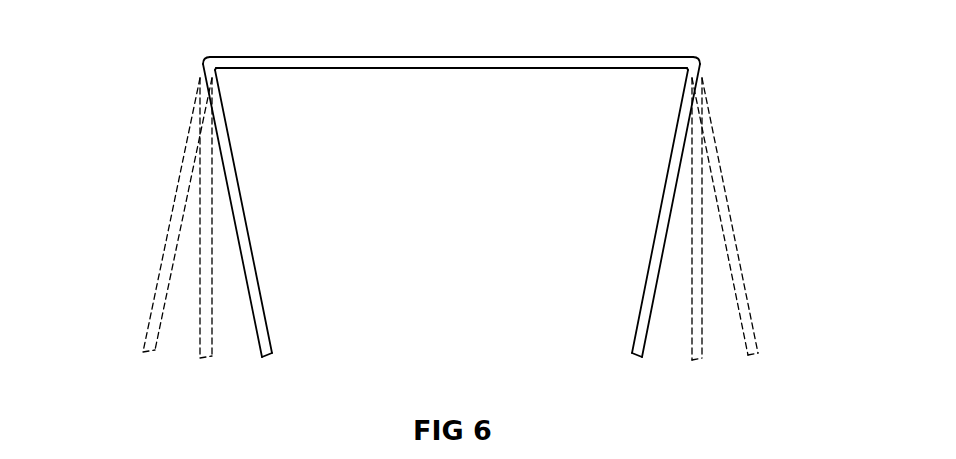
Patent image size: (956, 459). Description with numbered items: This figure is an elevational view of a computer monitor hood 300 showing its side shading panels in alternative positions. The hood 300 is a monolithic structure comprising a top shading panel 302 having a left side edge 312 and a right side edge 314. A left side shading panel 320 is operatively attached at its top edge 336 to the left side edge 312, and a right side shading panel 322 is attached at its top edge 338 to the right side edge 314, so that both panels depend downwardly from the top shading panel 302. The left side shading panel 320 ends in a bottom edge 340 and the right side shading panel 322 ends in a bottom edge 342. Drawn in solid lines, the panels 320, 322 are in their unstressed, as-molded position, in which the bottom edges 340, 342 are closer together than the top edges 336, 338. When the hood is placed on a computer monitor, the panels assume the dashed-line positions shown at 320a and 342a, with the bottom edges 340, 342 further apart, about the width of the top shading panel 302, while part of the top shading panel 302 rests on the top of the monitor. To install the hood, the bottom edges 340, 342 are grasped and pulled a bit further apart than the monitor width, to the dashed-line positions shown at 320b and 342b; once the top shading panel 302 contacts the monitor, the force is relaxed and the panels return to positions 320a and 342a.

The computer monitor hood 300 is at (447, 211).
The top shading panel 302 is at (410, 62).
The left side edge 312 is at (203, 59).
The right side edge 314 is at (700, 59).
The top edge 336 is at (216, 70).
The top edge 338 is at (687, 70).
The left side shading panel 320 is at (243, 257).
The right side shading panel 322 is at (655, 257).
The left side shading panel position 320a is at (215, 350).
The left side shading panel position 320b is at (153, 325).
The bottom edge 340 is at (265, 357).
The bottom edge 342 is at (633, 357).
The right leg vertical position 342a is at (693, 351).
The right leg outward position 342b is at (752, 328).